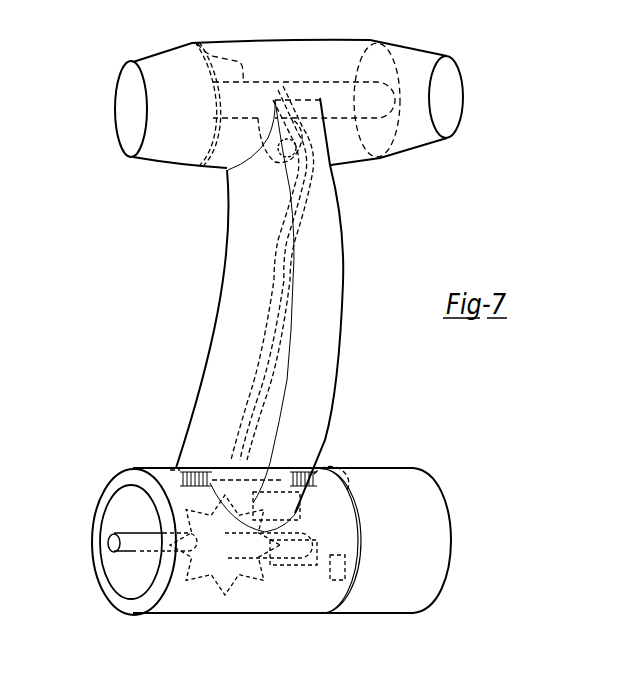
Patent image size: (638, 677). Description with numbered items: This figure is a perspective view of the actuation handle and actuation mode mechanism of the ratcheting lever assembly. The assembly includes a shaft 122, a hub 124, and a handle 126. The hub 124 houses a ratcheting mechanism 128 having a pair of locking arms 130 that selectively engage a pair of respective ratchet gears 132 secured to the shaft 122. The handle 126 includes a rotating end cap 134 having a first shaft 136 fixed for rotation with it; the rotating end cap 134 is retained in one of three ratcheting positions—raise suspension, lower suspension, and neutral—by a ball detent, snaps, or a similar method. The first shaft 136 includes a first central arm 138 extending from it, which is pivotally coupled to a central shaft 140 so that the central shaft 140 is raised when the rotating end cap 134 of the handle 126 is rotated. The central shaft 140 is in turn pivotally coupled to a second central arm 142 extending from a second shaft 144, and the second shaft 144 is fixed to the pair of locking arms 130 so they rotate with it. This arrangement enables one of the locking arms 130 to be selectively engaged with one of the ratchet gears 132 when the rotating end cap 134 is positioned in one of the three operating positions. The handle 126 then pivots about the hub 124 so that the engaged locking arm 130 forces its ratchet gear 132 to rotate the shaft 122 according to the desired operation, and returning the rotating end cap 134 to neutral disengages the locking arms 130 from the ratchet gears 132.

The shaft 122 is at (137, 551).
The hub 124 is at (220, 614).
The handle 126 is at (289, 42).
The ratcheting mechanism 128 is at (245, 582).
The locking arms 130 is at (213, 463).
The ratchet gears 132 is at (173, 613).
The rotating end cap 134 is at (157, 163).
The first shaft 136 is at (197, 44).
The first central arm 138 is at (277, 157).
The central shaft 140 is at (302, 202).
The second central arm 142 is at (253, 475).
The second shaft 144 is at (348, 487).